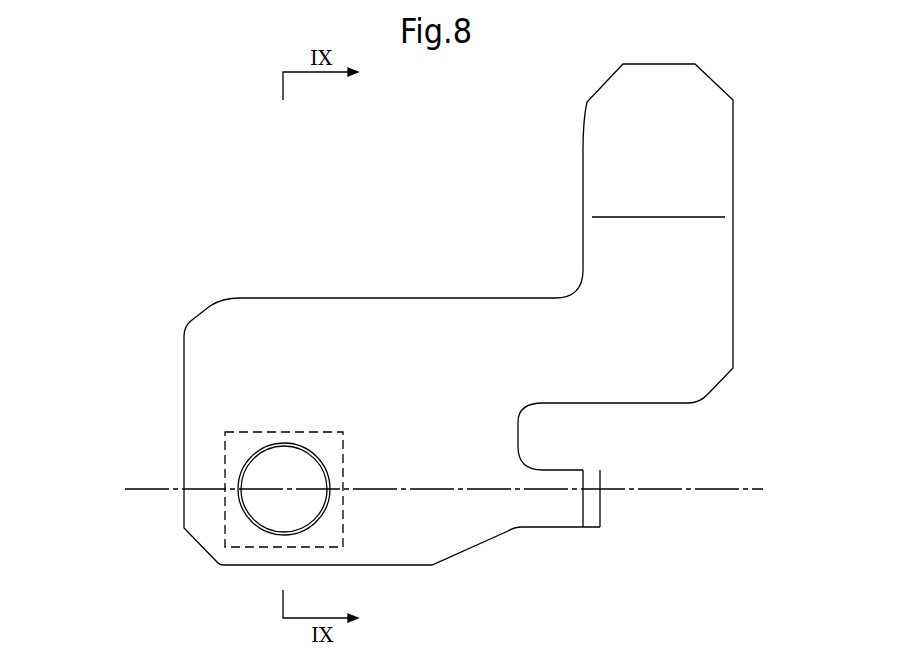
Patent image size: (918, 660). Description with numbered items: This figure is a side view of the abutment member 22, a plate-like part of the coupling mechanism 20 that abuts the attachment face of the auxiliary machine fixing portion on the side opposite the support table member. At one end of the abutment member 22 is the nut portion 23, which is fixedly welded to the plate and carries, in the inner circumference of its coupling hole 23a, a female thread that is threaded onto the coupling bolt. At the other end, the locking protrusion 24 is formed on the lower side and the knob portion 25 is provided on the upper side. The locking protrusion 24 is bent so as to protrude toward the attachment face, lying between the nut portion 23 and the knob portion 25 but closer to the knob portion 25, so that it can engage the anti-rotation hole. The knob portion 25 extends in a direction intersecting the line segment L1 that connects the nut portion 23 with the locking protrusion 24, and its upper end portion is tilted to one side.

The abutment member 22 is at (180, 260).
The coupling mechanism 20 is at (309, 374).
The nut portion 23 is at (225, 447).
The coupling hole 23a is at (265, 508).
The locking protrusion 24 is at (593, 522).
The knob portion 25 is at (720, 153).
The line segment L1 is at (663, 489).